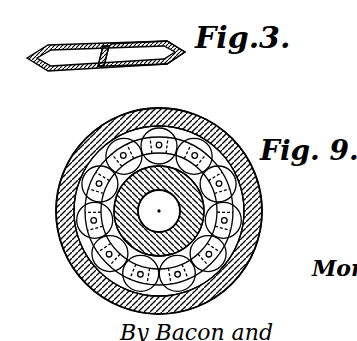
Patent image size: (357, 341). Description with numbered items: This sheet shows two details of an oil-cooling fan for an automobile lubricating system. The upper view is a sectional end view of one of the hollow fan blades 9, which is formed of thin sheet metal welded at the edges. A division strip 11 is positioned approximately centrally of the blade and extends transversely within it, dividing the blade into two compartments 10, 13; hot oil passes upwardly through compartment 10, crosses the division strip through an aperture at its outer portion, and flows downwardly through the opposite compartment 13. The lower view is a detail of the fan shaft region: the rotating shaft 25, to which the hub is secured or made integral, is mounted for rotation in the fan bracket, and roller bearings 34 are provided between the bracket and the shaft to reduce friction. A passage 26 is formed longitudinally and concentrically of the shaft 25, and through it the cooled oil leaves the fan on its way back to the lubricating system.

In FIG. 3, the fan blade 9 is at (113, 45).
In FIG. 3, the compartment 10 is at (67, 52).
In FIG. 3, the division strip 11 is at (103, 64).
In FIG. 3, the compartment 13 is at (152, 50).
In FIG. 9, the rotating shaft 25 is at (150, 220).
In FIG. 9, the passage 26 is at (117, 283).
In FIG. 9, the roller bearings 34 is at (183, 122).